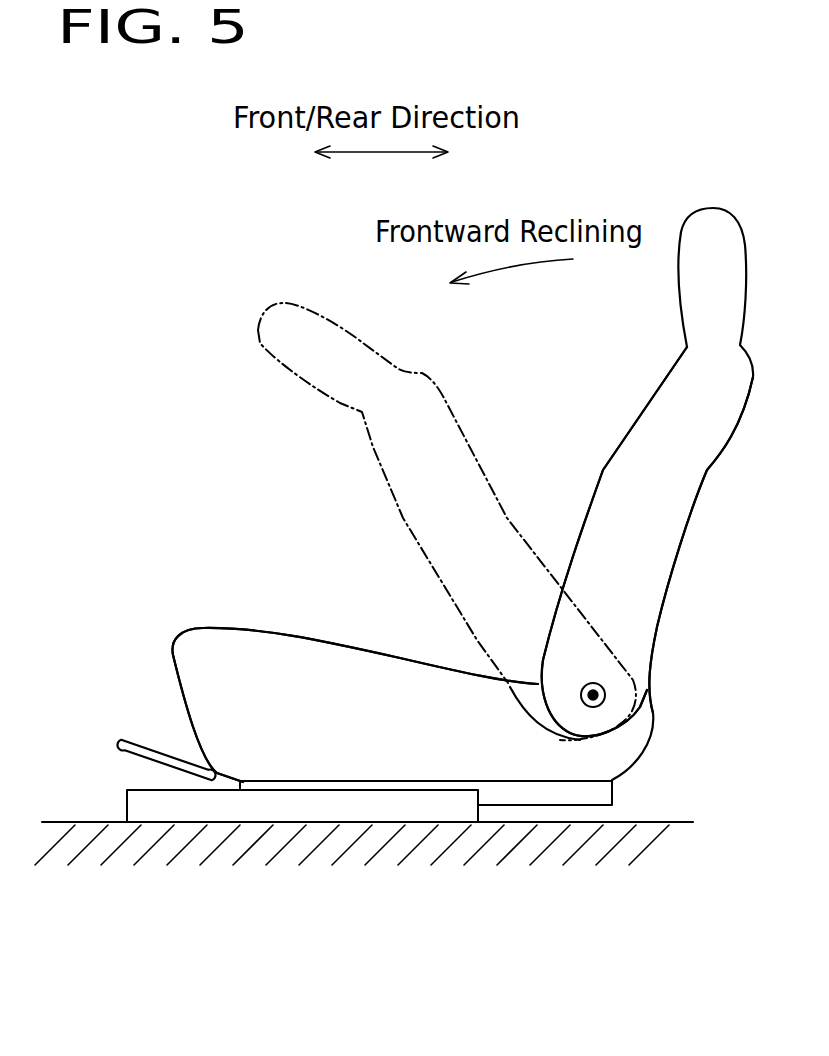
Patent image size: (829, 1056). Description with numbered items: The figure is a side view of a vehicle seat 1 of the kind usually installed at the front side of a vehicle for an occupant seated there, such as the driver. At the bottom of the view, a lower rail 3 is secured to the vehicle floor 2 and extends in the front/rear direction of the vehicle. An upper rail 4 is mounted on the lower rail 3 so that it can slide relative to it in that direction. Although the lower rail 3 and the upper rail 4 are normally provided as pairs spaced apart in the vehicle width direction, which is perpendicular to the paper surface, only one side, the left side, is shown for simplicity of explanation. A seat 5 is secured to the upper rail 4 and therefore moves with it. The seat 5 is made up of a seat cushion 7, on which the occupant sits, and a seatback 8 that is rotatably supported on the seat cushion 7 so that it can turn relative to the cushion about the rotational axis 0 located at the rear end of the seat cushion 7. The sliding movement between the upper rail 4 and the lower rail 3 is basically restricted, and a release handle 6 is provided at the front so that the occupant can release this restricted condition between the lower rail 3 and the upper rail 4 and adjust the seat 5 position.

The rotational axis 0 is at (599, 691).
The vehicle seat 1 is at (546, 445).
The vehicle floor 2 is at (60, 820).
The lower rail 3 is at (390, 805).
The upper rail 4 is at (600, 792).
The seat 5 is at (372, 545).
The release handle 6 is at (145, 745).
The seat cushion 7 is at (395, 674).
The seatback 8 is at (583, 552).